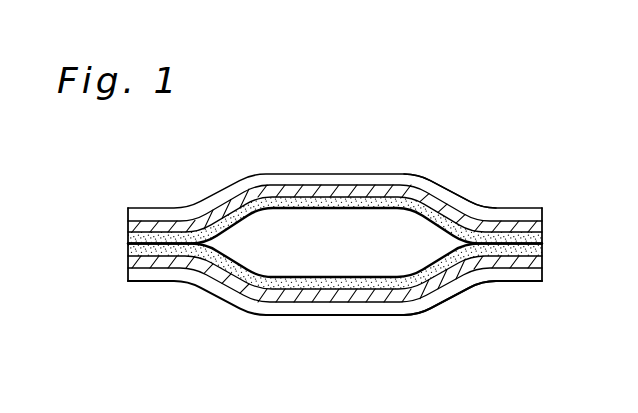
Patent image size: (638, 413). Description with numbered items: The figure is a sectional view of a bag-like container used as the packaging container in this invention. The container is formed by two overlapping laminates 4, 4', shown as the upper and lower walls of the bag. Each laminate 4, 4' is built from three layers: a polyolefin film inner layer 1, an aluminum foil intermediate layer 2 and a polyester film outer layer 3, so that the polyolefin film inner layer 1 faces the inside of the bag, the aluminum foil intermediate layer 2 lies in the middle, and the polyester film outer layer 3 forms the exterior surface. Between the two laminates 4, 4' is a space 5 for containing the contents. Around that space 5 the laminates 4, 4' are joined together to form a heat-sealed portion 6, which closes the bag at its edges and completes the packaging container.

The polyolefin film inner layer 1 is at (337, 202).
The aluminum foil intermediate layer 2 is at (295, 190).
The polyester film outer layer 3 is at (270, 180).
The laminate 4 is at (450, 176).
The laminate 4' is at (450, 321).
The space 5 is at (305, 272).
The heat-sealed portion 6 is at (128, 293).